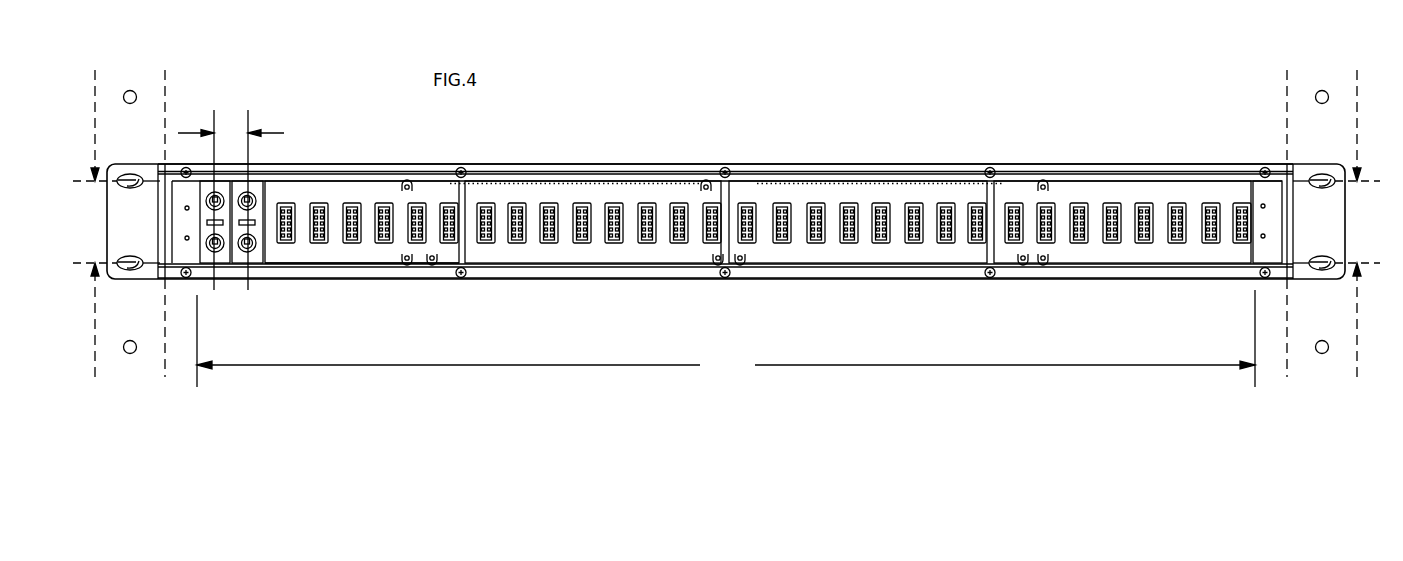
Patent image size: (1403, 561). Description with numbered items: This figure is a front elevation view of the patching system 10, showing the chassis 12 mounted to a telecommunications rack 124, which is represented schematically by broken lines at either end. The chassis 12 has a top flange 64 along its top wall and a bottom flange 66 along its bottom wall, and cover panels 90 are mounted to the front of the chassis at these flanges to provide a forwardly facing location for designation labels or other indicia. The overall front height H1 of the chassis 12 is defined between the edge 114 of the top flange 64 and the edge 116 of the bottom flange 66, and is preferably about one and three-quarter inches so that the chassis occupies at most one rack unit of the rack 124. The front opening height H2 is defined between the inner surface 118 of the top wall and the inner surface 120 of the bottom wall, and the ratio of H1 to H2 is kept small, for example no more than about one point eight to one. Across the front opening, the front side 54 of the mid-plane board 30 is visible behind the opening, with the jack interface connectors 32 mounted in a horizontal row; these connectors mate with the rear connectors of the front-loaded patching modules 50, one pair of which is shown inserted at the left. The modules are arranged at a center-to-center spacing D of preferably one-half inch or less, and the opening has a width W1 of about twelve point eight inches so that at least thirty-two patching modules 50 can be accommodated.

The patching system 10 is at (735, 132).
The chassis 12 is at (527, 157).
The mid-plane board 30 is at (780, 195).
The jack interface connectors 32 is at (490, 203).
The front-loaded patching modules 50 is at (217, 257).
The front side of the mid-plane board 54 is at (900, 195).
The top flange 64 is at (668, 167).
The bottom flange 66 is at (757, 277).
The cover panels 90 is at (867, 170).
The edge of the top flange 114 is at (592, 169).
The edge of the bottom flange 116 is at (660, 278).
The inner surface of the top wall 118 is at (347, 183).
The inner surface of the bottom wall 120 is at (320, 260).
The rack 124 is at (726, 222).
The center-to-center spacing D is at (240, 200).
The front height H1 is at (1337, 223).
The front opening height H2 is at (116, 223).
The width of the opening W1 is at (726, 338).